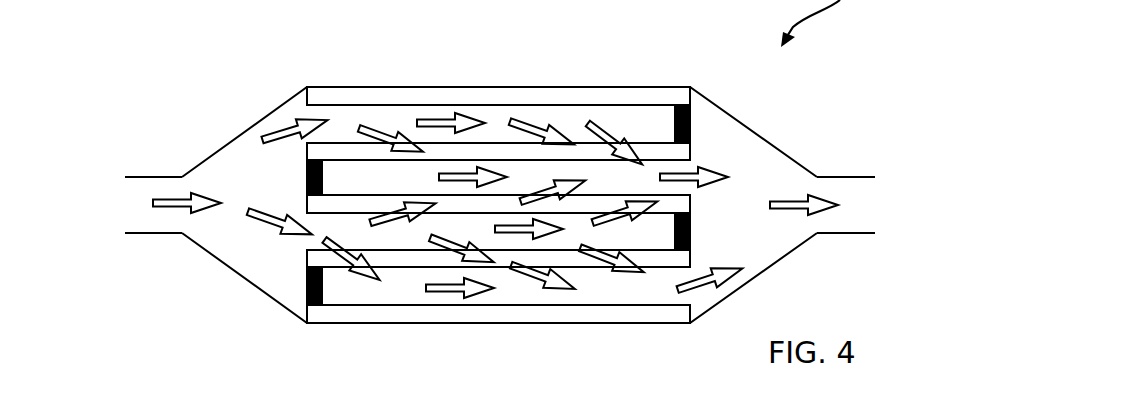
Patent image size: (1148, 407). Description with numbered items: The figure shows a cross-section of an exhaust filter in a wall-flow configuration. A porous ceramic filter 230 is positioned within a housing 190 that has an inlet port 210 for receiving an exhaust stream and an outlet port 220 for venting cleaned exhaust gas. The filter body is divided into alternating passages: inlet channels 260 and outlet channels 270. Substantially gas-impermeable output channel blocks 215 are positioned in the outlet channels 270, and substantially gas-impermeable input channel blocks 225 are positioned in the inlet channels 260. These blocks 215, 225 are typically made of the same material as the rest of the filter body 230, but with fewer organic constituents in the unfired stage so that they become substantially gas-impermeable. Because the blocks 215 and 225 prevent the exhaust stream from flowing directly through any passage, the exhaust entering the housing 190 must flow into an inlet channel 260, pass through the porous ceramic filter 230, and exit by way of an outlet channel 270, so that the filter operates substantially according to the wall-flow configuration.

The housing 190 is at (280, 107).
The inlet port 210 is at (147, 177).
The output channel block 215 is at (307, 182).
The outlet port 220 is at (848, 177).
The input channel block 225 is at (690, 122).
The porous ceramic filter 230 is at (342, 150).
The inlet channel 260 is at (649, 122).
The outlet channel 270 is at (532, 172).